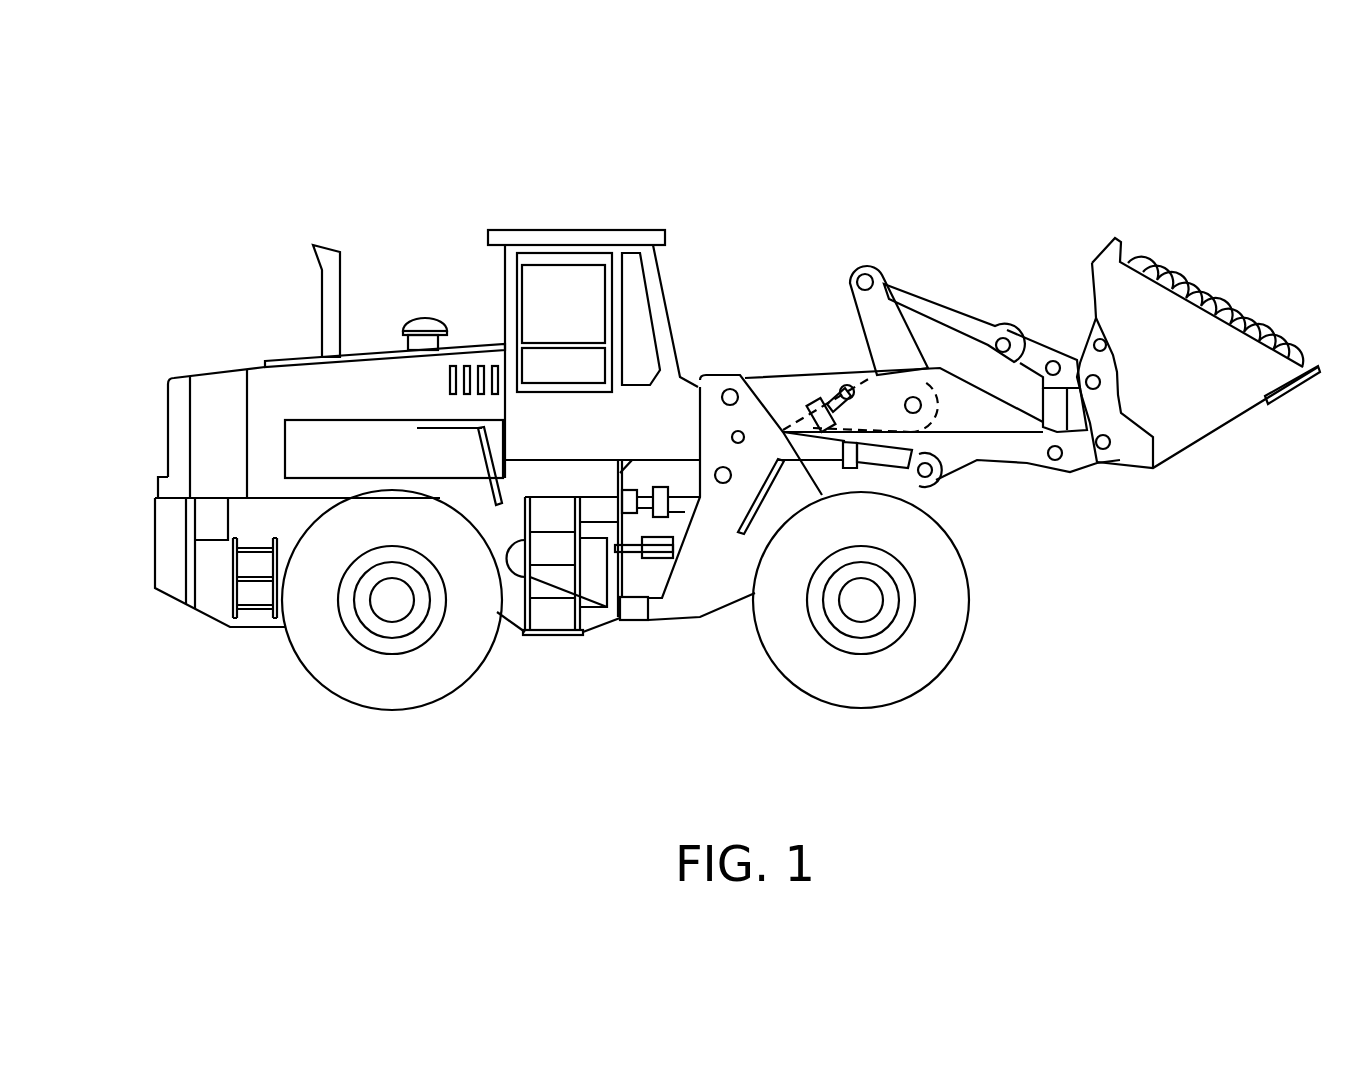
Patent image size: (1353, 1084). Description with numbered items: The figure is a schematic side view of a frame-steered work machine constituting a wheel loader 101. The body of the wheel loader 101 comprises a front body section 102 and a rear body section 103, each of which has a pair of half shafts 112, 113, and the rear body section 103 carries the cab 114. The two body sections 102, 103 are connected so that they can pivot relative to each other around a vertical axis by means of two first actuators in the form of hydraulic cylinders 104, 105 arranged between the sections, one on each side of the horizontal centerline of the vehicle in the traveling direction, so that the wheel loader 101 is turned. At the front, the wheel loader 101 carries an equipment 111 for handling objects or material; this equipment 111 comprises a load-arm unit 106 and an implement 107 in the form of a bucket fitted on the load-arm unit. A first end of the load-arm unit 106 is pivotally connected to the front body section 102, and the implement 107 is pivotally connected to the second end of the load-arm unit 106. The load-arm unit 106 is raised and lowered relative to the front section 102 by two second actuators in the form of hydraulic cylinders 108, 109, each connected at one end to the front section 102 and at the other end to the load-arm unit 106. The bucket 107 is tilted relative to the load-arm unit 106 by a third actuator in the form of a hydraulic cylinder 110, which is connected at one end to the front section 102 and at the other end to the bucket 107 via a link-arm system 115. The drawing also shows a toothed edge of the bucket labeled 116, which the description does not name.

The wheel loader 101 is at (440, 153).
The front body section 102 is at (683, 593).
The rear body section 103 is at (210, 588).
The hydraulic cylinder 104 is at (685, 503).
The hydraulic cylinder 105 is at (598, 547).
The load-arm unit 106 is at (1073, 458).
The implement 107 is at (1183, 408).
The hydraulic cylinder 108 is at (888, 472).
The hydraulic cylinder 109 is at (859, 459).
The hydraulic cylinder 110 is at (830, 397).
The equipment 111 is at (1023, 214).
The half shafts 112 is at (382, 603).
The half shafts 113 is at (867, 600).
The cab 114 is at (573, 237).
The link-arm system 115 is at (935, 312).
The bucket teeth 116 is at (1210, 298).